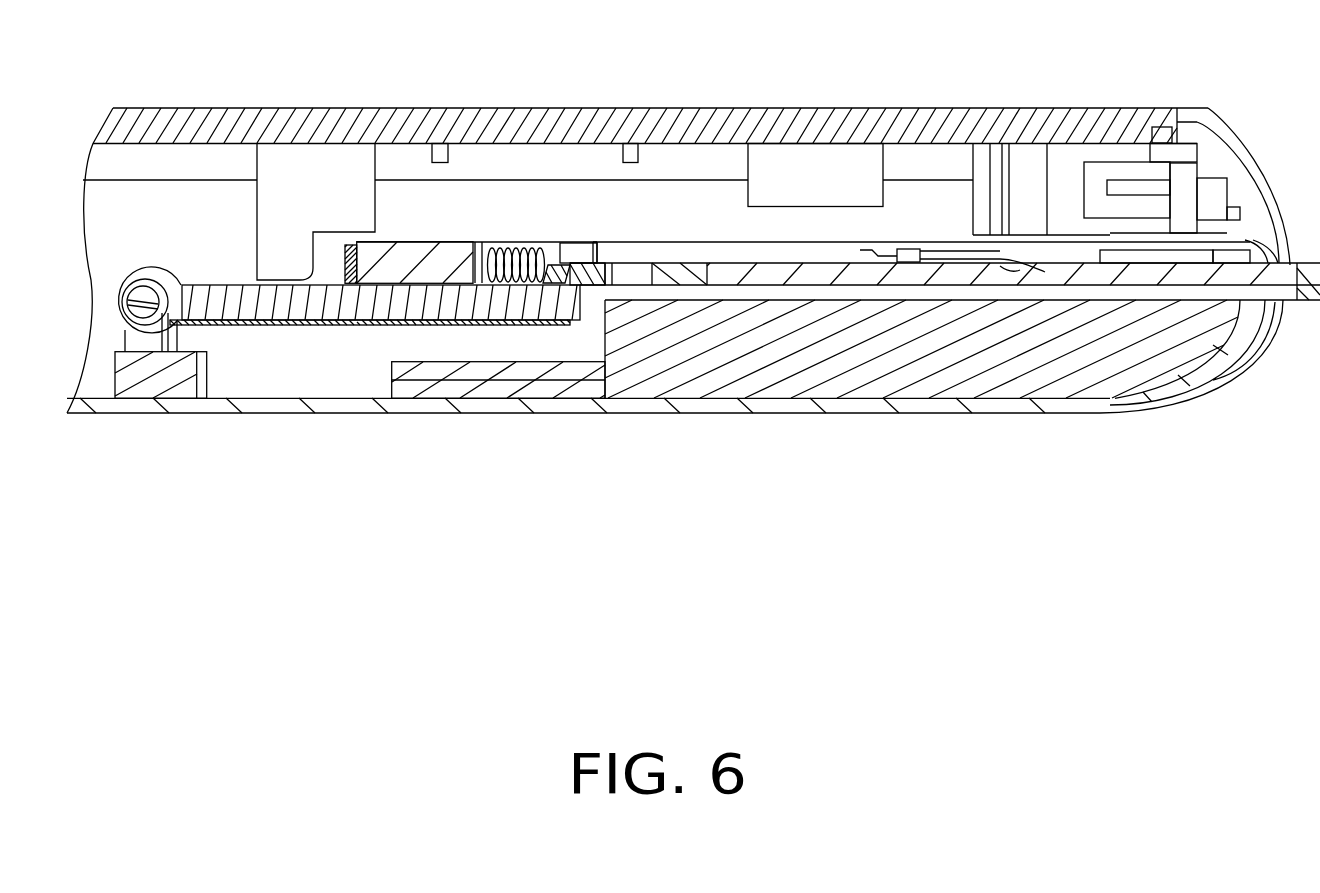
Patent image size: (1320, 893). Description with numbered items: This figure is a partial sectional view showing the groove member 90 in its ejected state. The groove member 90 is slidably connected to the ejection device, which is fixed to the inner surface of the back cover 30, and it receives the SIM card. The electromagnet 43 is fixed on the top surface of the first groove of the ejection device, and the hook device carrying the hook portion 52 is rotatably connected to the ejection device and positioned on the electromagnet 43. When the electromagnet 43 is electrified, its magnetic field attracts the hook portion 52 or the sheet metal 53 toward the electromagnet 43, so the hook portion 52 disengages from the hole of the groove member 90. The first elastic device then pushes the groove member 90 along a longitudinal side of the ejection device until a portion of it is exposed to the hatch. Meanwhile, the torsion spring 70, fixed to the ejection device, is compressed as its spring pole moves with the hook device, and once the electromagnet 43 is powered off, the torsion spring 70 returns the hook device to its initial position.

The torsion spring 70 is at (140, 283).
The hook portion 52 is at (552, 284).
The sheet metal 53 is at (362, 323).
The electromagnet 43 is at (482, 367).
The back cover 30 is at (840, 345).
The groove member 90 is at (1143, 277).